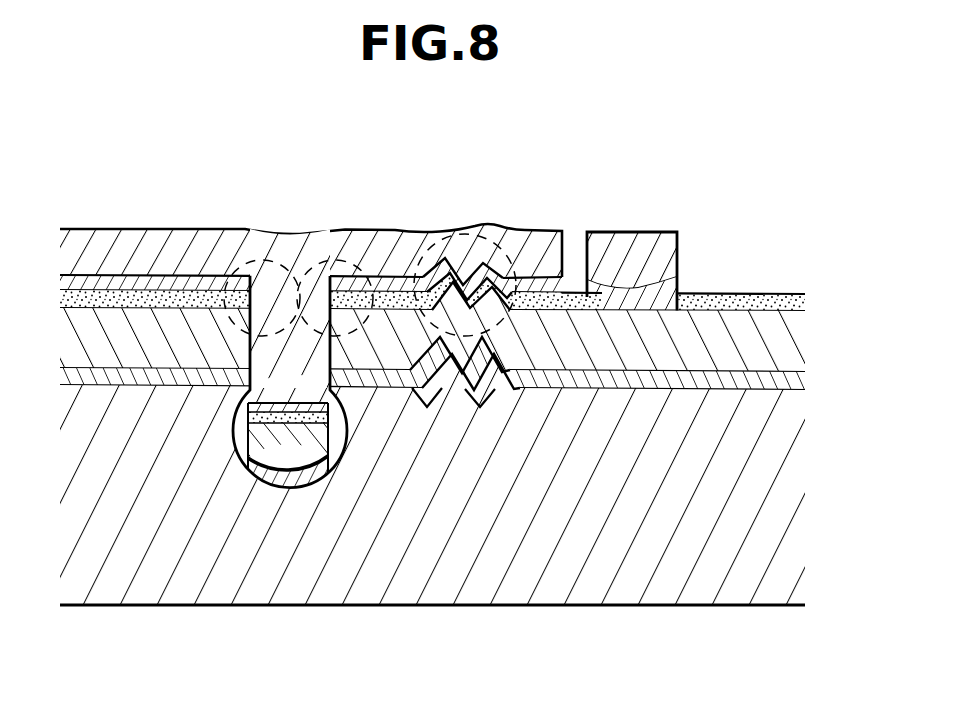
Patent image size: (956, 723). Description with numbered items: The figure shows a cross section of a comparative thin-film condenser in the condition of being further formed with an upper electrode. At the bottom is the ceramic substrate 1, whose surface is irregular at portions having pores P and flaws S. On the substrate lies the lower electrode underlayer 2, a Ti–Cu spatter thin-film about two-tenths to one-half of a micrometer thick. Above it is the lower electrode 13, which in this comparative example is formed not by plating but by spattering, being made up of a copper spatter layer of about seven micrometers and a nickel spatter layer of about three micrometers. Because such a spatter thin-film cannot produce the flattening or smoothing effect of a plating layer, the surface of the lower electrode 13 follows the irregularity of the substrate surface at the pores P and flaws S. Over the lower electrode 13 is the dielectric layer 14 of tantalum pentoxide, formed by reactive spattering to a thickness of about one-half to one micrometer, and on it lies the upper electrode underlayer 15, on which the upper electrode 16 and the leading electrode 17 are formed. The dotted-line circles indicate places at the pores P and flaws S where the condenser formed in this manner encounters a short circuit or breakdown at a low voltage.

The ceramic substrate 1 is at (572, 584).
The lower electrode underlayer 2 is at (685, 385).
The lower electrode 13 is at (768, 330).
The dielectric layer 14 is at (720, 300).
The upper electrode underlayer 15 is at (614, 280).
The upper electrode 16 is at (387, 243).
The leading electrode 17 is at (652, 248).
The pores P is at (292, 230).
The flaws S is at (462, 232).